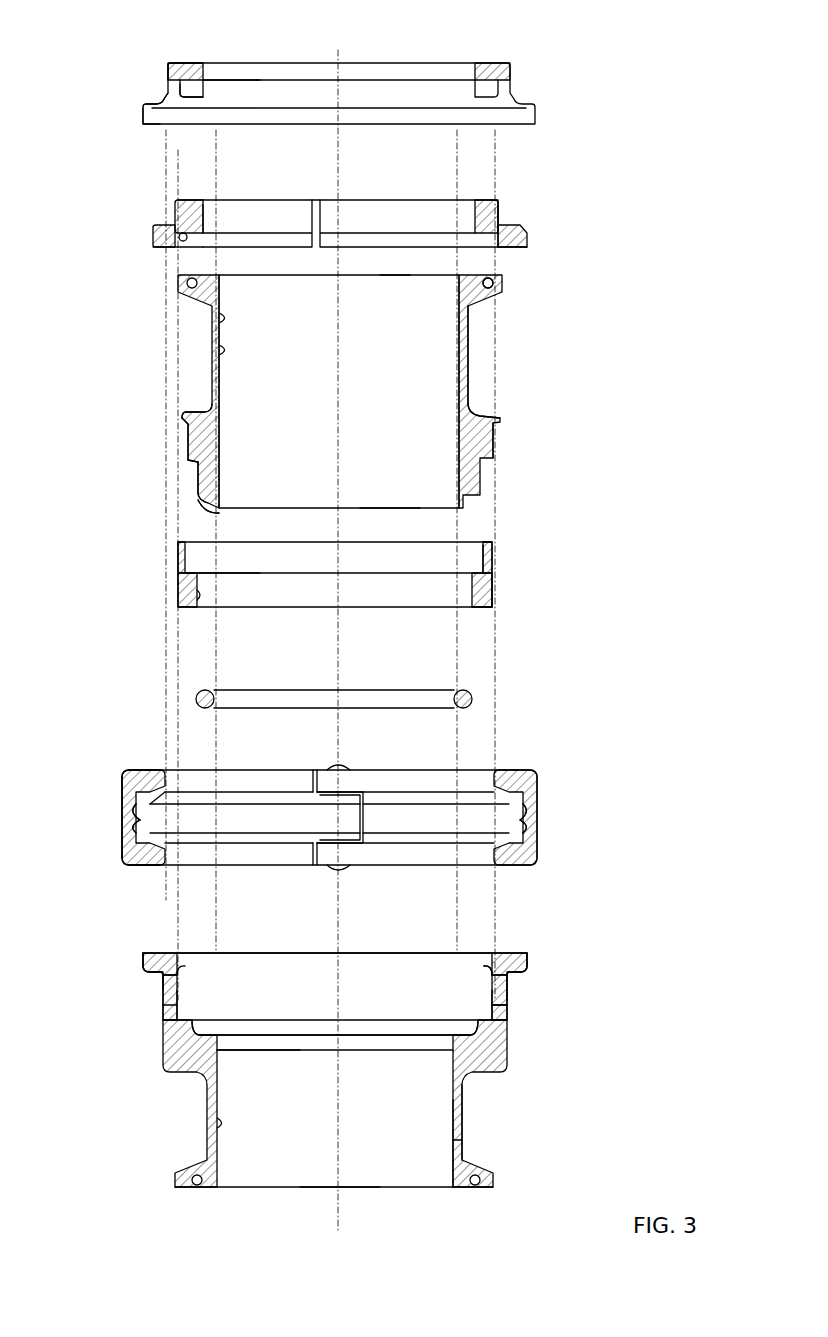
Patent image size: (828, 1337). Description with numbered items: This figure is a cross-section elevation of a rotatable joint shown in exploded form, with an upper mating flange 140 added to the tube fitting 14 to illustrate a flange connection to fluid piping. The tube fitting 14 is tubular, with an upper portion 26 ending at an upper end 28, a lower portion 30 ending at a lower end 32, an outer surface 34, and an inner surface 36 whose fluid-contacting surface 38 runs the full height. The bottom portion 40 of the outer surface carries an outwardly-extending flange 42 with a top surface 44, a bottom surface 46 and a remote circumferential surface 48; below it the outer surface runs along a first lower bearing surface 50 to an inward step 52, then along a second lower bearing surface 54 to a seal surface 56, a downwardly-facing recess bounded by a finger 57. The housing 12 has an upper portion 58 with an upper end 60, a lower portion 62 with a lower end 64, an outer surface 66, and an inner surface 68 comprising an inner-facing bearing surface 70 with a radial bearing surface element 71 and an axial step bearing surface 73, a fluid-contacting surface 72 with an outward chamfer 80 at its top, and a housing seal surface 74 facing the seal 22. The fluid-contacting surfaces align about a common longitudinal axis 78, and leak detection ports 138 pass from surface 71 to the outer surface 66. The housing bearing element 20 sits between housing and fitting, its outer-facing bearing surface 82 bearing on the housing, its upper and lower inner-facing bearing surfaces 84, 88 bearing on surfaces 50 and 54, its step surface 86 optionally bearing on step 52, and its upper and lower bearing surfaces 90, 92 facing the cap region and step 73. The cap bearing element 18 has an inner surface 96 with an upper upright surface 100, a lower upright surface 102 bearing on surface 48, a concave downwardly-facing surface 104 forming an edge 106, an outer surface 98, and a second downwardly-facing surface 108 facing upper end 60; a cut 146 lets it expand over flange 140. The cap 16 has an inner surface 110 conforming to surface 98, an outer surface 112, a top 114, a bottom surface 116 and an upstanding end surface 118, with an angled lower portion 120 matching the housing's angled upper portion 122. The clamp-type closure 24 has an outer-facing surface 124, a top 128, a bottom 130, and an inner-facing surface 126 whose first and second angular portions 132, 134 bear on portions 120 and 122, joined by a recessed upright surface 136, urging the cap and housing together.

The housing 12 is at (510, 1045).
The tube fitting 14 is at (470, 340).
The cap 16 is at (425, 62).
The cap bearing element 18 is at (432, 200).
The housing bearing element 20 is at (495, 552).
The seal 22 is at (470, 696).
The clamp-type closure 24 is at (487, 768).
The upper portion 26 is at (470, 322).
The upper end 28 is at (398, 275).
The lower portion 30 is at (495, 450).
The lower end 32 is at (393, 510).
The outer surface 34 is at (470, 385).
The inner surface 36 is at (228, 355).
The fluid-contacting surface 38 is at (222, 318).
The bottom portion 40 is at (186, 432).
The outwardly-extending flange 42 is at (500, 417).
The top surface 44 is at (182, 413).
The bottom surface 46 is at (185, 425).
The remote circumferential surface 48 is at (180, 418).
The first lower tube fitting bearing surface 50 is at (188, 448).
The inward step 52 is at (198, 465).
The second lower tube fitting bearing surface 54 is at (198, 480).
The seal surface 56 is at (210, 500).
The finger 57 is at (210, 515).
The upper portion 58 is at (509, 988).
The upper end 60 is at (385, 953).
The lower portion 62 is at (464, 1150).
The lower end 64 is at (353, 1190).
The outer surface 66 is at (464, 1123).
The inner surface 68 is at (450, 1145).
The inner-facing bearing surface 70 is at (183, 967).
The radial bearing surface element 71 is at (492, 972).
The fluid-contacting surface 72 is at (220, 1123).
The axial step bearing surface 73 is at (190, 1010).
The housing seal surface 74 is at (215, 1022).
The common longitudinal axis 78 is at (330, 1190).
The chamfer 80 is at (240, 1057).
The outer-facing bearing surface 82 is at (497, 592).
The upper inner-facing bearing surface 84 is at (495, 570).
The step surface 86 is at (190, 572).
The lower inner-facing bearing surface 88 is at (185, 607).
The upper bearing surface 90 is at (492, 545).
The lower bearing surface 92 is at (475, 608).
The inner surface 96 is at (205, 227).
The outer surface 98 is at (500, 213).
The upper upright surface 100 is at (205, 215).
The lower upright surface 102 is at (180, 240).
The downwardly-facing surface 104 is at (185, 255).
The edge 106 is at (188, 238).
The second downwardly-facing surface 108 is at (520, 250).
The inner surface 110 is at (205, 95).
The outer surface 112 is at (176, 60).
The top 114 is at (187, 62).
The bottom surface 116 is at (146, 122).
The upstanding end surface 118 is at (205, 78).
The upwardly-facing lower portion 120 is at (158, 102).
The downwardly-facing upper portion 122 is at (163, 985).
The outer-facing surface 124 is at (120, 787).
The inner-facing surface 126 is at (140, 830).
The top 128 is at (142, 770).
The bottom 130 is at (145, 862).
The first angular portion 132 is at (138, 820).
The second angular portion 134 is at (155, 835).
The upright surface 136 is at (527, 822).
The leak detection port 138 is at (509, 1012).
The upper mating flange 140 is at (505, 272).
The cut 146 is at (318, 205).